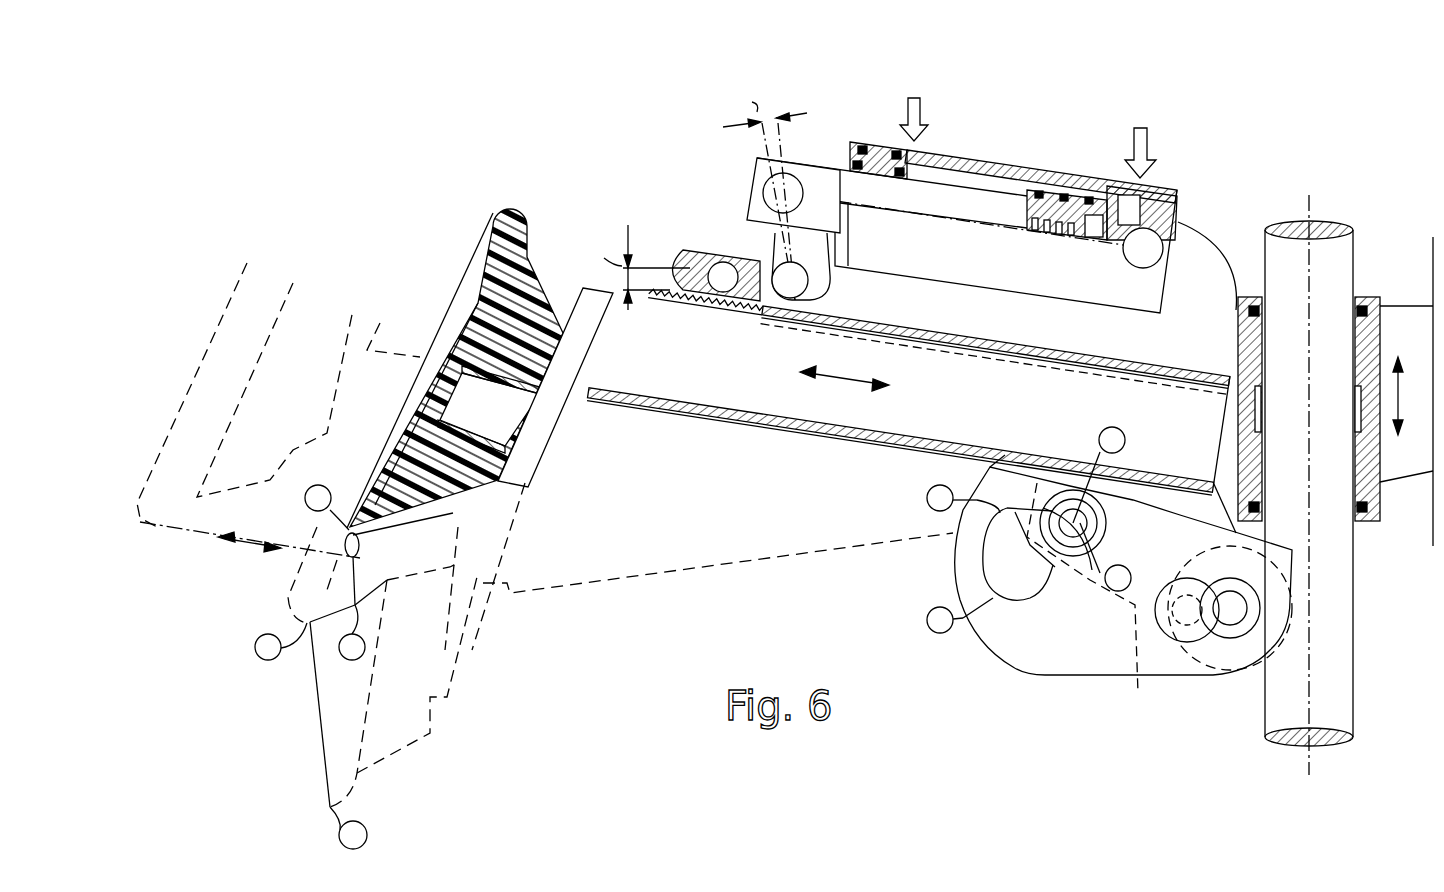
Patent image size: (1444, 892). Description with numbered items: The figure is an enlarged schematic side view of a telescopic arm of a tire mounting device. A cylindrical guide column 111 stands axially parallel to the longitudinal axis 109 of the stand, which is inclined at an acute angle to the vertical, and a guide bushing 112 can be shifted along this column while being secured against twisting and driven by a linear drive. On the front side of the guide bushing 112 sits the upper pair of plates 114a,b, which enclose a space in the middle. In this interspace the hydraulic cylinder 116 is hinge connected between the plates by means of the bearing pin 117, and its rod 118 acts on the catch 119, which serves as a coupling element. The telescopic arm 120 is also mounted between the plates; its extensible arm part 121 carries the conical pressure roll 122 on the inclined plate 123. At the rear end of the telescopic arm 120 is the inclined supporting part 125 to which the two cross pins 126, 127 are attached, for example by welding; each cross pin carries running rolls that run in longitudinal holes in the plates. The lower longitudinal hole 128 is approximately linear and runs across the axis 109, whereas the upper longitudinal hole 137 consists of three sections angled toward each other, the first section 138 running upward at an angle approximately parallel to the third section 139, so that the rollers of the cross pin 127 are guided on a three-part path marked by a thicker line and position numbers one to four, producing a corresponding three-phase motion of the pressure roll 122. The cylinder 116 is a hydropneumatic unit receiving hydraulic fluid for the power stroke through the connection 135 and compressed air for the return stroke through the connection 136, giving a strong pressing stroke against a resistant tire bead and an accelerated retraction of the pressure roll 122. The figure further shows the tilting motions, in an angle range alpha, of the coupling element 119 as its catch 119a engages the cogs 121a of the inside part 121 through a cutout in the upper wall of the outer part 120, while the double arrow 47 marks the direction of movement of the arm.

The longitudinal axis 109 is at (1312, 752).
The cylindrical guide column 111 is at (1340, 268).
The guide bushing 112 is at (1376, 522).
The upper pair of plates 114a,b is at (1048, 655).
The hydraulic cylinder 116 is at (977, 152).
The bearing pin 117 is at (1150, 243).
The rod 118 is at (823, 180).
The catch 119 is at (757, 182).
The catch 119a is at (690, 258).
The telescopic arm 120 is at (747, 417).
The extensible arm part 121 is at (638, 370).
The cogs 121a is at (712, 313).
The conical pressure roll 122 is at (511, 205).
The inclined plate 123 is at (530, 452).
The inclined supporting part 125 is at (1138, 682).
The cross pin 126 is at (1232, 606).
The cross pin 127 is at (1108, 516).
The lower longitudinal hole 128 is at (1190, 640).
The connection 135 is at (1148, 152).
The connection 136 is at (906, 92).
The upper longitudinal hole 137 is at (1032, 605).
The first section 138 is at (1073, 492).
The third section 139 is at (993, 580).
The direction of movement 47 is at (842, 378).